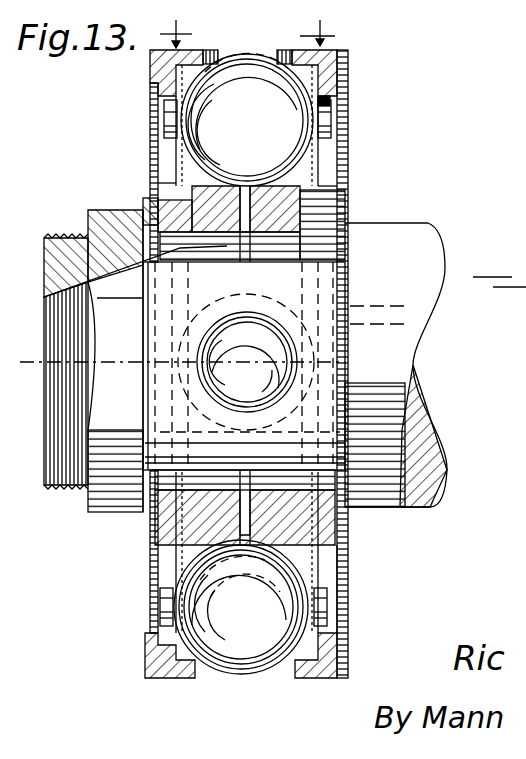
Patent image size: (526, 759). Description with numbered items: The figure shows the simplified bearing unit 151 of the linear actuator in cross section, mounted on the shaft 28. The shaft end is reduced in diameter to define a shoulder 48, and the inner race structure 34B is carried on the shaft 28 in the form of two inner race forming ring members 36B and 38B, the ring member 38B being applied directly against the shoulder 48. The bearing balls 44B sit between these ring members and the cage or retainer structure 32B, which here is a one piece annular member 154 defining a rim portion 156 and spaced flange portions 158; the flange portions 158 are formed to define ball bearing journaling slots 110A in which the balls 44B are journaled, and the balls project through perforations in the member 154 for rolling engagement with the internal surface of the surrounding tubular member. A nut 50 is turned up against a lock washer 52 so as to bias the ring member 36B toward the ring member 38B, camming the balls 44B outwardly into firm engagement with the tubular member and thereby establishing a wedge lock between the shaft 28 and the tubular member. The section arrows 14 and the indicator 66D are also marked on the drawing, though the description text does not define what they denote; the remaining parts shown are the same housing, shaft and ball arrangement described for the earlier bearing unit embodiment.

The section line 14 is at (248, 28).
The bearing balls 44B is at (255, 50).
The one piece annular member 154 is at (333, 48).
The bearing unit 151 is at (363, 68).
The cage or retainer structure 32B is at (350, 104).
The housing side wall 66D is at (361, 156).
The inner race structure 34B is at (137, 202).
The shoulder 48 is at (340, 212).
The shaft 28 is at (402, 234).
The inner race forming ring member 38B is at (346, 522).
The flange portions 158 is at (347, 545).
The ball bearing journaling slots 110A is at (340, 572).
The nut 50 is at (106, 488).
The lock washer 52 is at (145, 510).
The inner race forming ring member 36B is at (148, 535).
The rim portion 156 is at (303, 673).